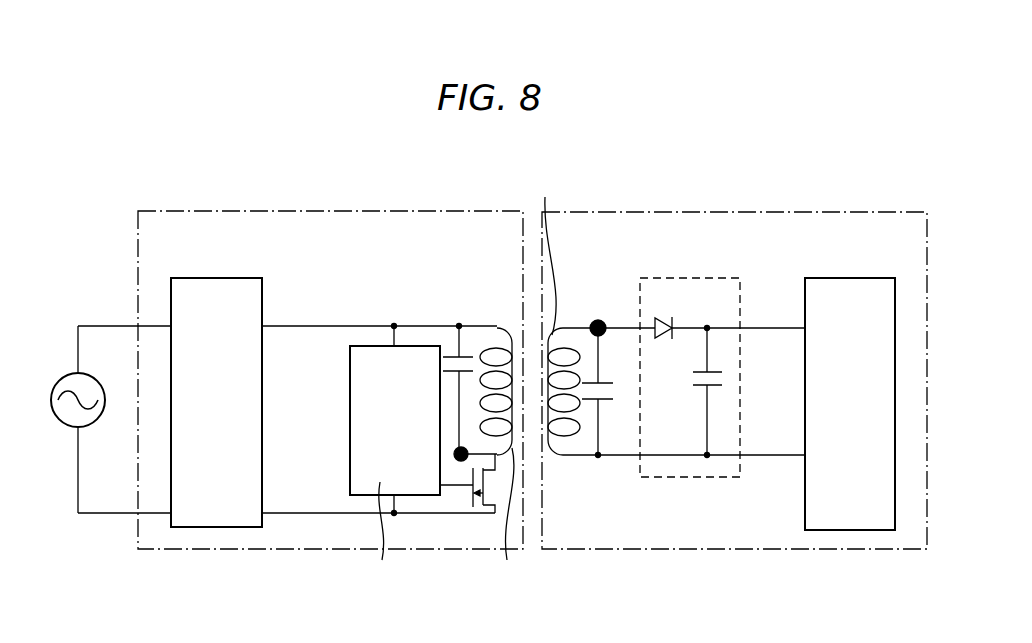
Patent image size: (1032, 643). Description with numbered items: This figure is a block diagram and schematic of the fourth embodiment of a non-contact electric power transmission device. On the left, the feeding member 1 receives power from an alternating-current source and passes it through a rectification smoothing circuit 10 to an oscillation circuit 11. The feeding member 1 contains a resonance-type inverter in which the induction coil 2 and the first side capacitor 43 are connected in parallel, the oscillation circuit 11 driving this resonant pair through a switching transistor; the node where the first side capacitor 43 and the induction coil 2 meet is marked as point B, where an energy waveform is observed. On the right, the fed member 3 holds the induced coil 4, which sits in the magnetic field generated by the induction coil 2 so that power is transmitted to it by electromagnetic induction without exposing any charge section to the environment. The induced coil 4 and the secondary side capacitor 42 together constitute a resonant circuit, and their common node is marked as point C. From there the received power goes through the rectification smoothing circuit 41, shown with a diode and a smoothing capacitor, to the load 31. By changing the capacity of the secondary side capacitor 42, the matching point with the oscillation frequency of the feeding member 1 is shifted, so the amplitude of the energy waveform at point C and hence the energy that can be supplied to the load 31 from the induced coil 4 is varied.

The feeding member 1 is at (183, 210).
The rectification smoothing circuit 10 is at (228, 278).
The oscillation circuit 11 is at (370, 346).
The first side capacitor 43 is at (452, 357).
The induction coil 2 is at (502, 335).
The point B is at (461, 462).
The fed member 3 is at (667, 212).
The induced coil 4 is at (556, 338).
The point C is at (600, 320).
The secondary side capacitor 42 is at (608, 400).
The rectification smoothing circuit 41 is at (702, 278).
The load 31 is at (837, 278).